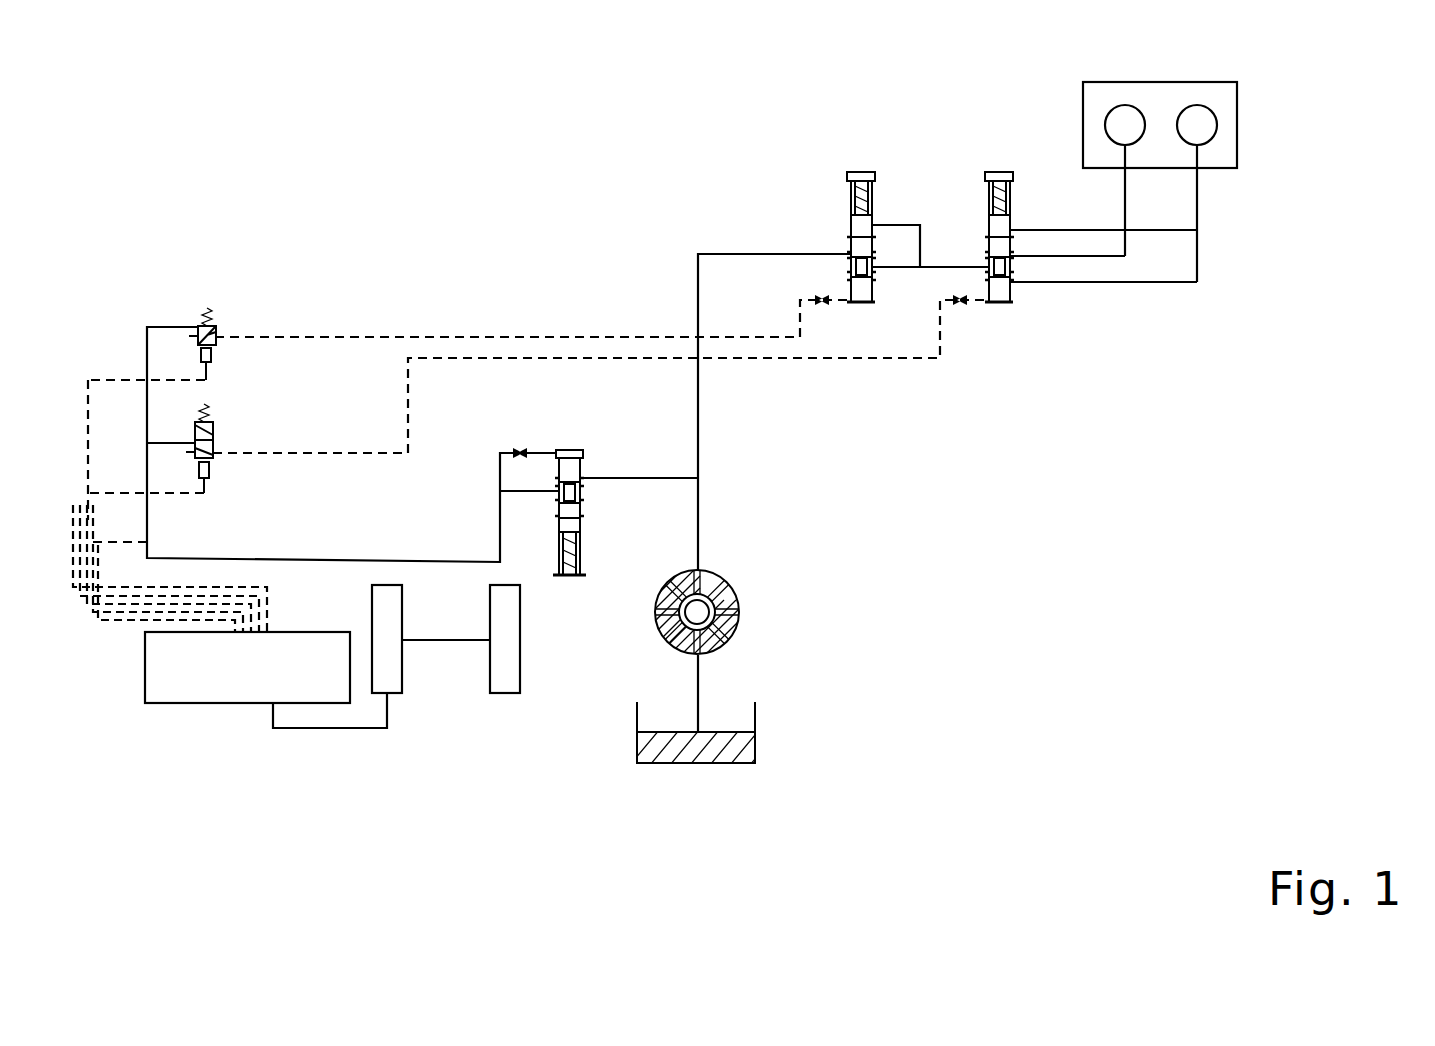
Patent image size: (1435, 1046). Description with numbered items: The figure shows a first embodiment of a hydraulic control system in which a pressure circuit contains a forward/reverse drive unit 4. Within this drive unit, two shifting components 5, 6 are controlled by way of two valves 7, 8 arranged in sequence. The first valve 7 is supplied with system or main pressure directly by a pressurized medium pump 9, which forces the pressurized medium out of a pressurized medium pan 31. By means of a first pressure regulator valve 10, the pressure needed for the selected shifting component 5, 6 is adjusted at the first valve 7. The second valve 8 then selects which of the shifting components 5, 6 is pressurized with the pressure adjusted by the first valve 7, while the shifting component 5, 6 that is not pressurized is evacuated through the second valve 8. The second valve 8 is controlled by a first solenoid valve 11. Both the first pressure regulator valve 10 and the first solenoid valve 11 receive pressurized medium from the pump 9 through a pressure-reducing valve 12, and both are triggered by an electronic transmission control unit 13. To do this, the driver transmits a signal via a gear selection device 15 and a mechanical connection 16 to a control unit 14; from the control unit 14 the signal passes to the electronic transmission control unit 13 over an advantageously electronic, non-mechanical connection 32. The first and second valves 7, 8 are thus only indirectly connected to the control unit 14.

The forward/reverse drive unit 4 is at (1225, 100).
The shifting component 5 is at (1125, 130).
The shifting component 6 is at (1197, 130).
The first valve 7 is at (852, 172).
The second valve 8 is at (992, 172).
The pressurized medium pump 9 is at (738, 632).
The first pressure regulator valve 10 is at (216, 334).
The first solenoid valve 11 is at (213, 433).
The pressure-reducing valve 12 is at (575, 578).
The electronic transmission control unit 13 is at (177, 685).
The control unit 14 is at (393, 665).
The gear selection device 15 is at (508, 657).
The mechanical connection 16 is at (443, 640).
The pressurized medium pan 31 is at (705, 750).
The non-mechanical connection 32 is at (287, 732).